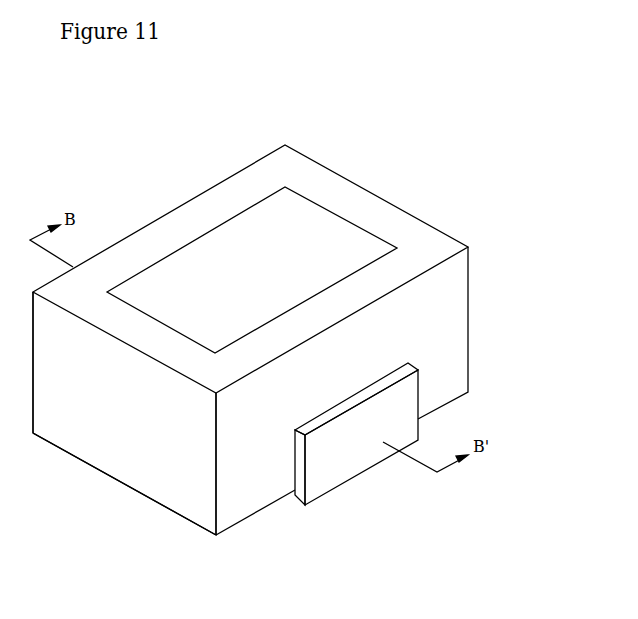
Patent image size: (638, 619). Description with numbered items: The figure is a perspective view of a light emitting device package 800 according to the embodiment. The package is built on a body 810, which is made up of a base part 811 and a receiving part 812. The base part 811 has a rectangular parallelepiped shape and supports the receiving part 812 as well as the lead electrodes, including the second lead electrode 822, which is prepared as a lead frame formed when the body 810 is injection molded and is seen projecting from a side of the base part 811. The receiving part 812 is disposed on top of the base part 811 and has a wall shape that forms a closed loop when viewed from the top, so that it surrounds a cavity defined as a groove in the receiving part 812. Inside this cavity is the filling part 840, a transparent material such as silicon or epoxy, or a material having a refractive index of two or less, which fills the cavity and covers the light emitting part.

The electronic device 800 is at (68, 139).
The body 810 is at (183, 557).
The base part 811 is at (197, 510).
The receiving part 812 is at (188, 415).
The second lead electrode 822 is at (362, 460).
The filling part 840 is at (222, 257).